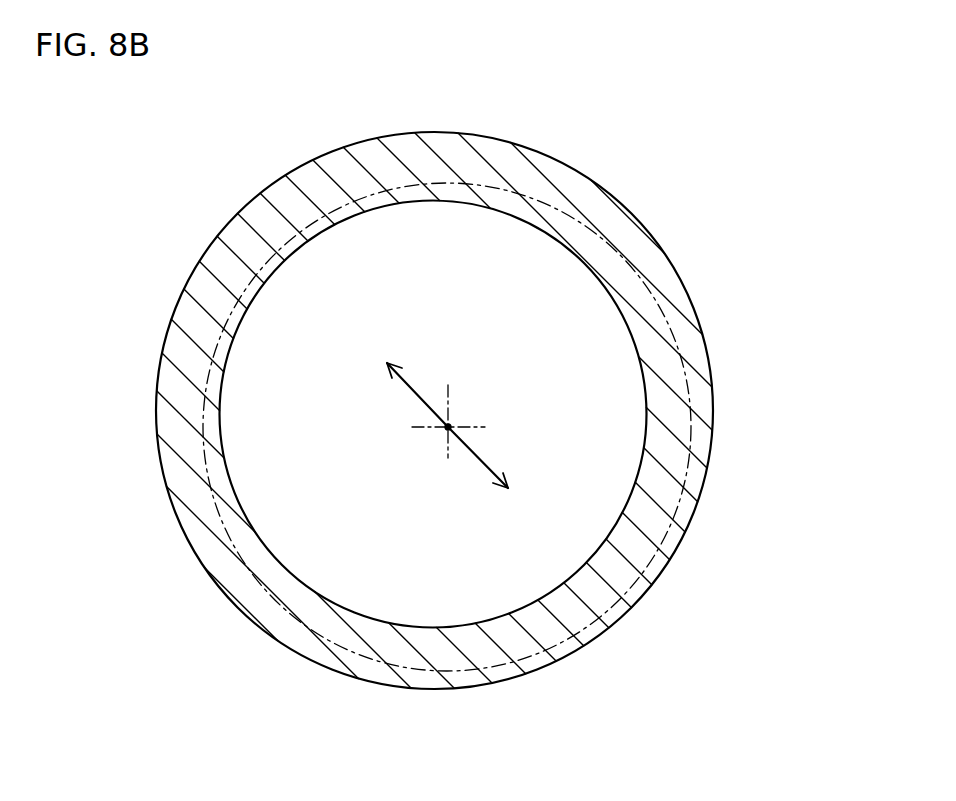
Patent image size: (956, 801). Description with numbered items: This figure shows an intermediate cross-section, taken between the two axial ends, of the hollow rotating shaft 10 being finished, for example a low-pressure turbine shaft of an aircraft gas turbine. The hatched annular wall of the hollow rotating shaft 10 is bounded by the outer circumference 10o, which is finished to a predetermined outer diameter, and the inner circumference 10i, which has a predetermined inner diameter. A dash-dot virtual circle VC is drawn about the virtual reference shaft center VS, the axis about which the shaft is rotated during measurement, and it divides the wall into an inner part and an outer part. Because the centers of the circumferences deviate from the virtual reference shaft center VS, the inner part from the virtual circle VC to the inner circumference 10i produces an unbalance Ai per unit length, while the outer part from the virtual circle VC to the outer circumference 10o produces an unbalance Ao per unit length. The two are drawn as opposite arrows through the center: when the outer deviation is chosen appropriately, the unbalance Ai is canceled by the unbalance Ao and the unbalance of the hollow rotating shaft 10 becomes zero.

The hollow rotating shaft 10 is at (434, 368).
The outer circumference 10o is at (380, 133).
The inner circumference 10i is at (486, 207).
The virtual circle VC is at (257, 249).
The virtual reference shaft center VS is at (450, 426).
The unbalance of the outer part Ao is at (413, 394).
The unbalance of the inner part Ai is at (488, 471).